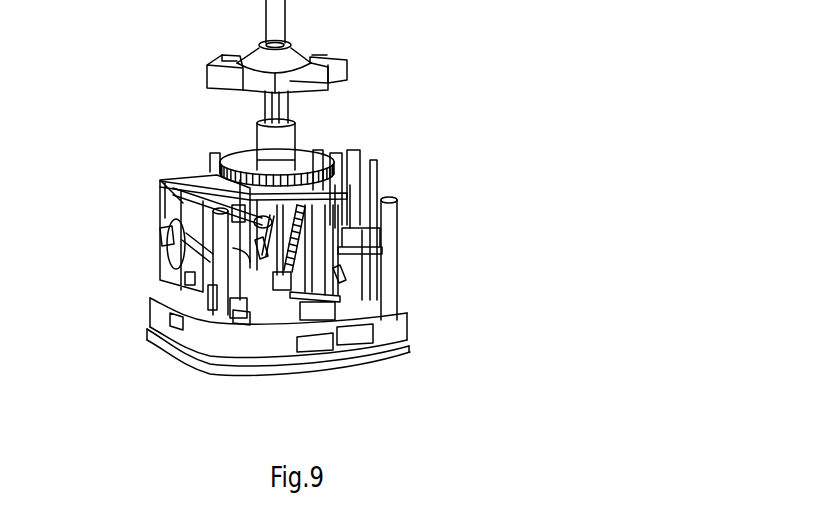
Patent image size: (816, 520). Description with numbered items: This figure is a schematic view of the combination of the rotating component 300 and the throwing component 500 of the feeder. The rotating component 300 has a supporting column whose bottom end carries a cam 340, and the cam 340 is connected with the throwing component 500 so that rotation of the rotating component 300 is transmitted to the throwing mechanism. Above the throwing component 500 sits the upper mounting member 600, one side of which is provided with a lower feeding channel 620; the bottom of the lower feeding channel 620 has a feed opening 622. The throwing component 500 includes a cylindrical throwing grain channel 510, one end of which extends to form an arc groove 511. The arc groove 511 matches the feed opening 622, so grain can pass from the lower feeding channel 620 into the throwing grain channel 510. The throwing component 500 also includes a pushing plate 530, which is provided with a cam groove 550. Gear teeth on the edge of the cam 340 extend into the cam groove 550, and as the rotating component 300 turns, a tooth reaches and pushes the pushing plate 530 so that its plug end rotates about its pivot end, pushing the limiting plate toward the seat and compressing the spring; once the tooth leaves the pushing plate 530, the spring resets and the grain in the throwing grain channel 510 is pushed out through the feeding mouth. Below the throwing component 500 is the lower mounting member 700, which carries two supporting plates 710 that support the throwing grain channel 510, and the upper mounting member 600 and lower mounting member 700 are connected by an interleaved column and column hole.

The rotating component 300 is at (343, 62).
The cam 340 is at (203, 174).
The lower feeding channel 620 is at (180, 200).
The feed opening 622 is at (163, 240).
The arc groove 511 is at (163, 254).
The throwing grain channel 510 is at (163, 278).
The throwing component 500 is at (212, 291).
The upper mounting member 600 is at (358, 150).
The cam groove 550 is at (265, 258).
The pushing plate 530 is at (325, 282).
The lower mounting member 700 is at (350, 337).
The supporting plates 710 is at (193, 308).